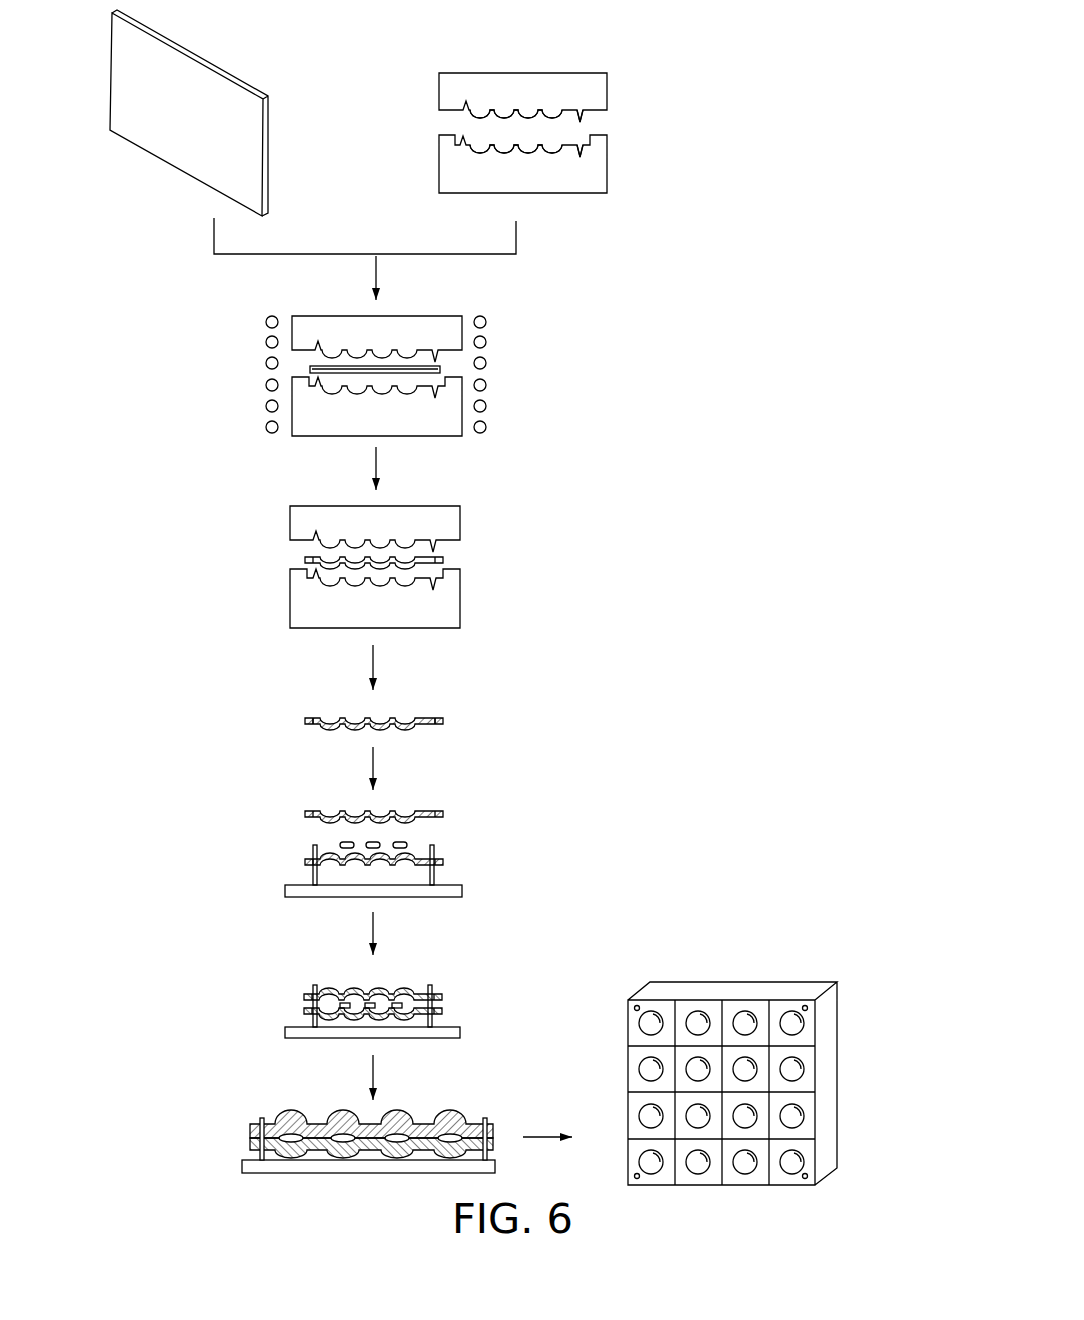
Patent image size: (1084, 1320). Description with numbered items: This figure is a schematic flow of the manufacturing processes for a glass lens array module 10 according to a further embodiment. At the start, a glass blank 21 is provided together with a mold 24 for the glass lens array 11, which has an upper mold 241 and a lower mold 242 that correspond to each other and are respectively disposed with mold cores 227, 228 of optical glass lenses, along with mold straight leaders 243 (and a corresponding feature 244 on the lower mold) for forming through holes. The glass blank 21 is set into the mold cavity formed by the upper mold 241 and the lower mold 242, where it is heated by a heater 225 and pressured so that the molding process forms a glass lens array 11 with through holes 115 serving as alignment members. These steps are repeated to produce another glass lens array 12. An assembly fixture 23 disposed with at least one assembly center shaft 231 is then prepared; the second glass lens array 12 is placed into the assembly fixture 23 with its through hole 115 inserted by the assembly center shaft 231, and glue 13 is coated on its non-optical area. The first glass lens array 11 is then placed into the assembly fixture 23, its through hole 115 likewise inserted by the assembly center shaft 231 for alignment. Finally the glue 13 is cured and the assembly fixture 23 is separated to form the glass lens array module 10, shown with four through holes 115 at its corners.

The glass lens array module 10 is at (243, 1112).
The glass lens array 11 is at (445, 562).
The glass lens array 12 is at (443, 860).
The glue 13 is at (342, 842).
The through hole 115 is at (433, 719).
The glass blank 21 is at (178, 156).
The assembly fixture 23 is at (428, 894).
The assembly center shaft 231 is at (313, 868).
The mold 24 is at (539, 254).
The upper mold 241 is at (590, 92).
The lower mold 242 is at (590, 182).
The mold straight leader 243 is at (588, 113).
The lower mold tooth 244 is at (588, 148).
The heater 225 is at (486, 364).
The mold core 227 is at (534, 110).
The mold core 228 is at (536, 148).